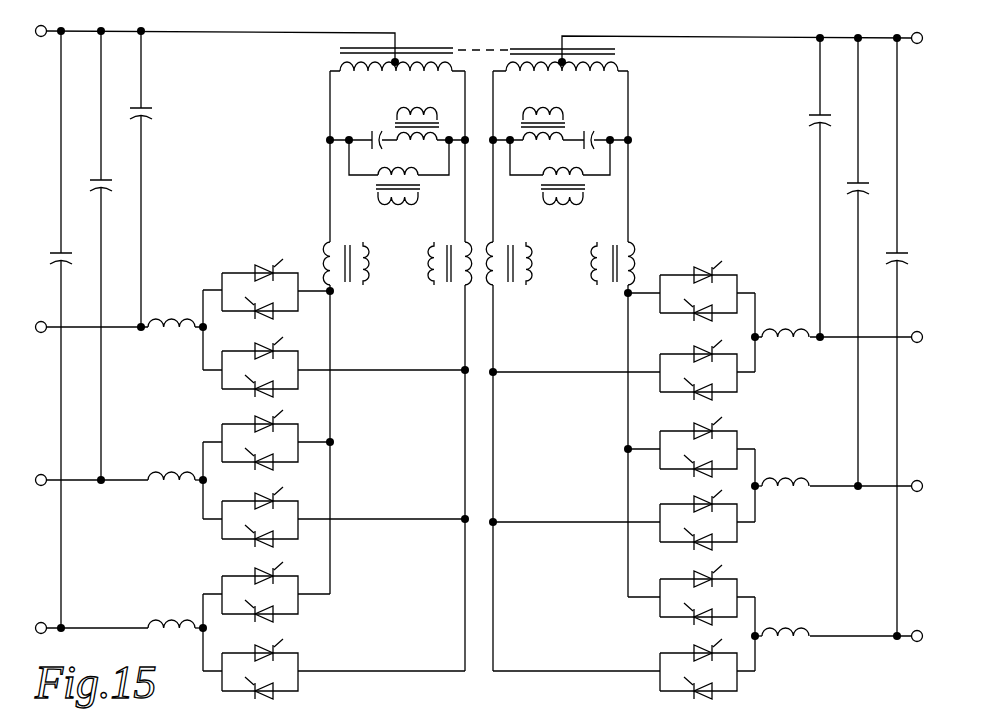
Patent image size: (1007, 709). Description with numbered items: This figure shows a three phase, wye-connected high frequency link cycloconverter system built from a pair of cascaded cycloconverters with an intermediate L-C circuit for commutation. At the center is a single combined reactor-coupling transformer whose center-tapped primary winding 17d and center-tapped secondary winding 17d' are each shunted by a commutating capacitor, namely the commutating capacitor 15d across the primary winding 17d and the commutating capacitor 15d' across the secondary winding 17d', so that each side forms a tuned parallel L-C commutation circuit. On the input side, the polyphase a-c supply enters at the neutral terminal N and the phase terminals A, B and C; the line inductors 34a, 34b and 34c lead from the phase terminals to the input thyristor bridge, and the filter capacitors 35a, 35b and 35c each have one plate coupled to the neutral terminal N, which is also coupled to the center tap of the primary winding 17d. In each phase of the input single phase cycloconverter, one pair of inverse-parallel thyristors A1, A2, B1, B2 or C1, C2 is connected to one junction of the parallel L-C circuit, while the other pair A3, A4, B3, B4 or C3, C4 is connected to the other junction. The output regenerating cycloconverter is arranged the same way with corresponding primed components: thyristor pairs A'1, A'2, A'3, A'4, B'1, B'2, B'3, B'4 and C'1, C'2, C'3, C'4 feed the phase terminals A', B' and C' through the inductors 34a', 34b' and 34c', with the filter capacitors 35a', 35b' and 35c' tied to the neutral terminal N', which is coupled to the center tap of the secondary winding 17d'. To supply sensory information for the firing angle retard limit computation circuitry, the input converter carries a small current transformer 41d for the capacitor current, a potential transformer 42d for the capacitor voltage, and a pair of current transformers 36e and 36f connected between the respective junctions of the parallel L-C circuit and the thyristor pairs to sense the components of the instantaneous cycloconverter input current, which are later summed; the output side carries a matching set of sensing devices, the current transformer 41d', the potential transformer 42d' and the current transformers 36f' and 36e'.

The center-tapped primary winding 17d is at (424, 36).
The center-tapped secondary winding 17d' is at (562, 36).
The commutating capacitor 15d is at (397, 152).
The commutating capacitor 15d' is at (560, 152).
The current transformer 41d is at (417, 113).
The current transformer 41d' is at (543, 113).
The potential transformer 42d is at (399, 187).
The potential transformer 42d' is at (560, 187).
The filter capacitor 35a is at (153, 181).
The filter capacitor 35b is at (113, 257).
The filter capacitor 35c is at (73, 331).
The filter capacitor 35a' is at (803, 189).
The filter capacitor 35b' is at (845, 264).
The filter capacitor 35c' is at (884, 339).
The line inductor 34a is at (170, 340).
The line inductor 34b is at (168, 490).
The line inductor 34c is at (168, 635).
The line inductor (prime side) 34a' is at (795, 349).
The line inductor (prime side) 34b' is at (796, 497).
The line inductor (prime side) 34c' is at (795, 647).
The current transformer 36e is at (351, 418).
The current transformer 36f is at (445, 456).
The current transformer 36f' is at (513, 456).
The current transformer 36e' is at (605, 419).
The controlled rectifier A1 is at (263, 271).
The controlled rectifier A2 is at (260, 312).
The controlled rectifier A3 is at (263, 351).
The controlled rectifier A4 is at (260, 389).
The controlled rectifier B1 is at (263, 424).
The controlled rectifier B2 is at (260, 462).
The controlled rectifier B3 is at (263, 499).
The controlled rectifier B4 is at (260, 537).
The controlled rectifier C1 is at (264, 574).
The controlled rectifier C2 is at (260, 615).
The controlled rectifier C3 is at (264, 650).
The controlled rectifier C4 is at (260, 689).
The controlled rectifier (prime side) A'1 is at (704, 275).
The controlled rectifier (prime side) A'2 is at (698, 314).
The controlled rectifier (prime side) A'3 is at (704, 353).
The controlled rectifier (prime side) A'4 is at (698, 392).
The controlled rectifier (prime side) B'1 is at (704, 430).
The controlled rectifier (prime side) B'2 is at (698, 469).
The controlled rectifier (prime side) B'3 is at (704, 502).
The controlled rectifier (prime side) B'4 is at (698, 542).
The controlled rectifier (prime side) C'1 is at (704, 577).
The controlled rectifier (prime side) C'2 is at (698, 618).
The controlled rectifier (prime side) C'3 is at (704, 651).
The controlled rectifier (prime side) C'4 is at (698, 690).
The neutral terminal N is at (40, 45).
The phase A terminal A is at (87, 340).
The phase B terminal B is at (91, 493).
The phase C terminal C is at (91, 641).
The neutral terminal N' is at (916, 51).
The phase A terminal (prime side) A' is at (872, 350).
The phase B terminal (prime side) B' is at (867, 499).
The phase C terminal (prime side) C' is at (867, 649).